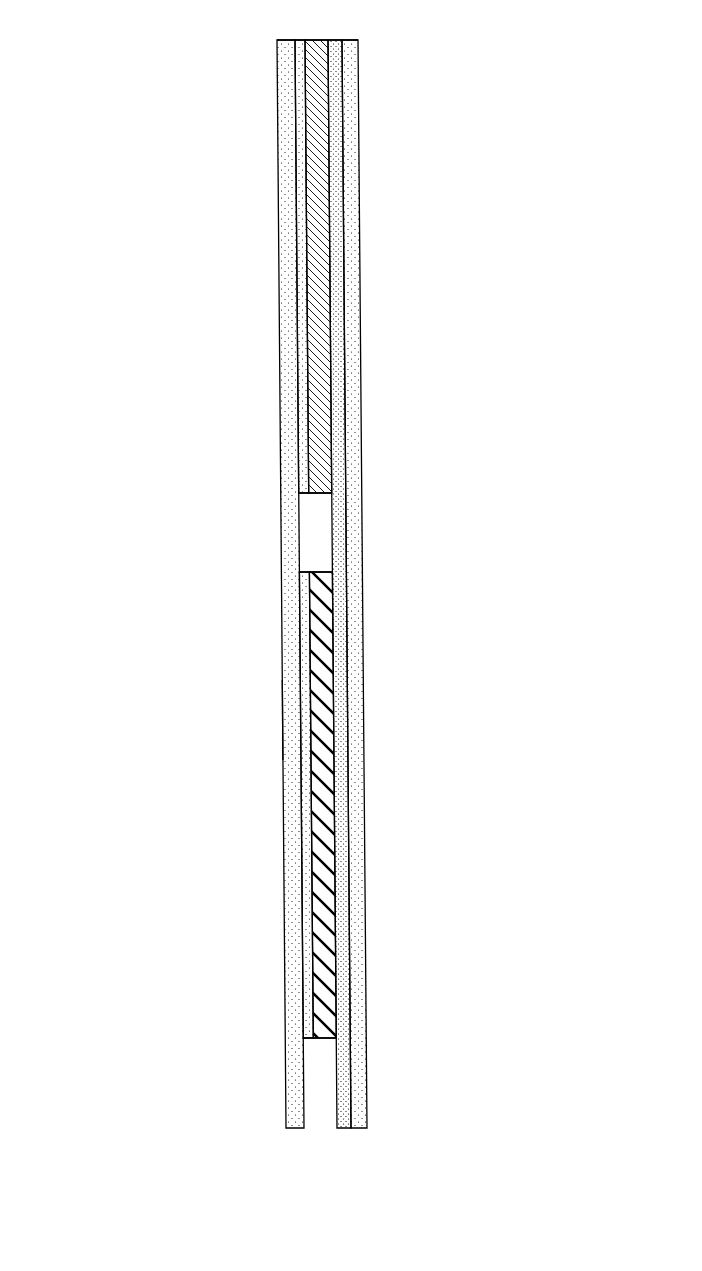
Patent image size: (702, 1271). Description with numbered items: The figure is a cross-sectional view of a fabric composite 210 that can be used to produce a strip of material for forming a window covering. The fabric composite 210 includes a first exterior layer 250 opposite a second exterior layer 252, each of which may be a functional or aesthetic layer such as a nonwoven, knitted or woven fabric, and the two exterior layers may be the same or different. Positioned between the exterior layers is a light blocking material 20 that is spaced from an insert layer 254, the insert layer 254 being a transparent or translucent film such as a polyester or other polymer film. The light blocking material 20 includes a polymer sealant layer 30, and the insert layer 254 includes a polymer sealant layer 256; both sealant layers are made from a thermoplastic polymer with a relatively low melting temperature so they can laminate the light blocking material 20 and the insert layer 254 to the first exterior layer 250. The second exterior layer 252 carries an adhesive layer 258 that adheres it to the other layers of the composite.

The fabric composite 210 is at (145, 143).
The light blocking material 20 is at (320, 33).
The polymer sealant layer 30 is at (280, 305).
The first exterior layer 250 is at (283, 752).
The second exterior layer 252 is at (332, 413).
The insert layer 254 is at (338, 908).
The polymer sealant layer 256 is at (302, 928).
The adhesive layer 258 is at (340, 618).